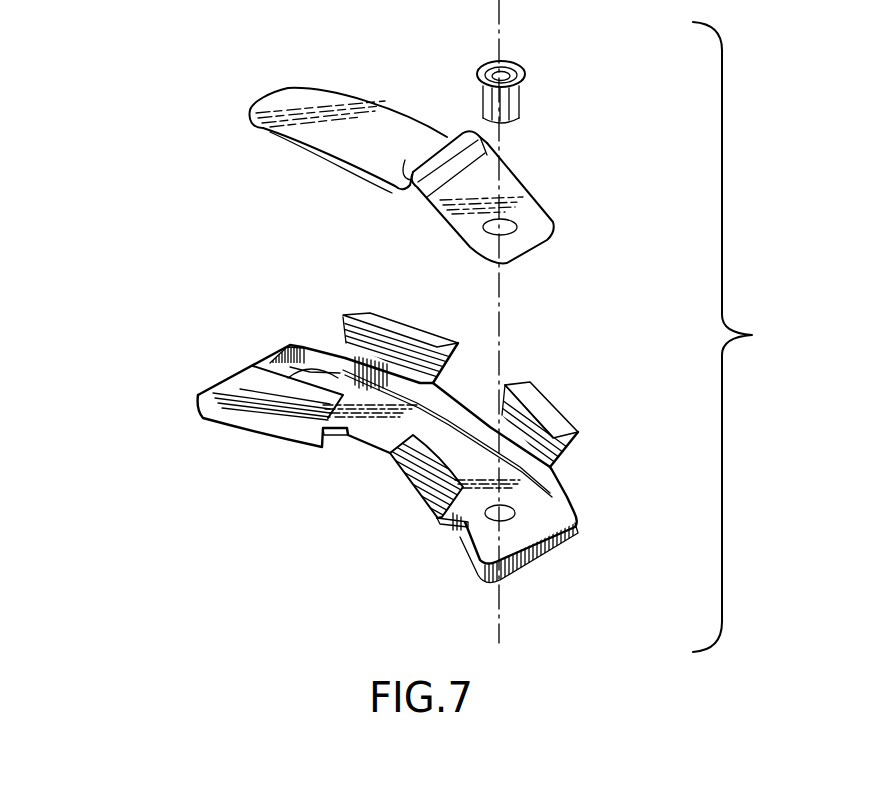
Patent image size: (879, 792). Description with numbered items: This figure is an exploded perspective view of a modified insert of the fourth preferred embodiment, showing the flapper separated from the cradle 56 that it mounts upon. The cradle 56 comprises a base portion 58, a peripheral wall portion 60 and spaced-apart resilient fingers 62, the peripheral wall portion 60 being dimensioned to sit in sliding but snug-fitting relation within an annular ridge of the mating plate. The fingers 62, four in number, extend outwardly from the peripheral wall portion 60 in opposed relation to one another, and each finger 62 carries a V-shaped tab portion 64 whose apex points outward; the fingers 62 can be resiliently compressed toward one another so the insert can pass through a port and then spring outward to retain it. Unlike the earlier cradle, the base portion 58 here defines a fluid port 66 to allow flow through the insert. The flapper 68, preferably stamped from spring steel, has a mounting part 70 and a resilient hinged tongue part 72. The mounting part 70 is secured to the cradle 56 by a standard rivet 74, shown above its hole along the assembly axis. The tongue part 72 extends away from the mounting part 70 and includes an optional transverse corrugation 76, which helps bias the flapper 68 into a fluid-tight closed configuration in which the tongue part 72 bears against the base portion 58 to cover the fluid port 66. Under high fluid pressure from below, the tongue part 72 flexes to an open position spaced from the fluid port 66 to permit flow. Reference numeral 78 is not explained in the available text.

The cradle 56 is at (178, 252).
The base portion 58 is at (540, 512).
The peripheral wall portion 60 is at (557, 543).
The resilient fingers 62 is at (448, 352).
The V-shaped tab portion 64 is at (403, 328).
The fluid port 66 is at (308, 366).
The flapper 68 is at (540, 174).
The mounting part 70 is at (470, 215).
The tongue part 72 is at (348, 120).
The rivet 74 is at (518, 100).
The transverse corrugation 76 is at (453, 128).
The arm underside 78 is at (328, 161).